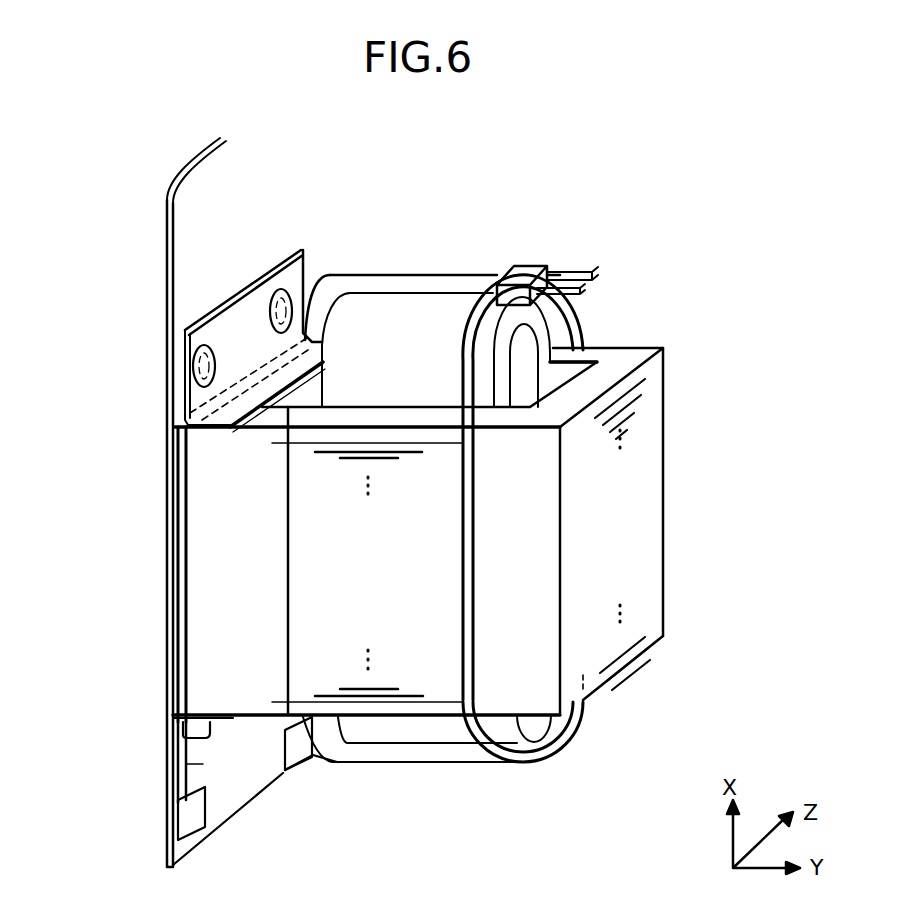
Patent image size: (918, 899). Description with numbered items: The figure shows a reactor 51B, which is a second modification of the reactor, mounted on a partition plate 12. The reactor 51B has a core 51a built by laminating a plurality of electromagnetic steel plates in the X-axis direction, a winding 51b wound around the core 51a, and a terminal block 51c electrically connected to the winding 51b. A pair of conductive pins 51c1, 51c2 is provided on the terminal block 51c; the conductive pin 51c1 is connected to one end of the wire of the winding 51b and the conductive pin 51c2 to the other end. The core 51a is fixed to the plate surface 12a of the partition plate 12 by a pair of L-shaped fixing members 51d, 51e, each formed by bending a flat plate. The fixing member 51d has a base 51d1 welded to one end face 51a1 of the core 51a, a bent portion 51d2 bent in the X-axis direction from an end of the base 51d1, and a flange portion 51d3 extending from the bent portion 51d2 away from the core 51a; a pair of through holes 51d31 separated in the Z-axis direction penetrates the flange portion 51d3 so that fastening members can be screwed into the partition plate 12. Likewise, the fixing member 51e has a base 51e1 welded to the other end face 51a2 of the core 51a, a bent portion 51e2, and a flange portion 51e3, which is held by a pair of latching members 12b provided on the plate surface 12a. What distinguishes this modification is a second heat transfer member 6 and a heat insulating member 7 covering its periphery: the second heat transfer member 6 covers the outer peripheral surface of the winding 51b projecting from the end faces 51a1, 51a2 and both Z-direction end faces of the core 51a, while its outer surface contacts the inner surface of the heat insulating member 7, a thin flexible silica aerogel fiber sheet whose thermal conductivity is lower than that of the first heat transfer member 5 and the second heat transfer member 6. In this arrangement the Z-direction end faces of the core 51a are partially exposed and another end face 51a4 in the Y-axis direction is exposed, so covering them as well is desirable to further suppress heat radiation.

The first heat transfer member 5 is at (168, 494).
The second heat transfer member 6 is at (473, 483).
The heat insulating member 7 is at (452, 520).
The partition plate 12 is at (167, 222).
The plate surface 12a is at (205, 192).
The latching members 12b is at (293, 750).
The core 51a is at (633, 660).
The one end face 51a1 is at (640, 352).
The other end face 51a2 is at (585, 703).
The other end face in Y-axis direction 51a4 is at (647, 543).
The reactor 51B is at (667, 585).
The winding 51b is at (543, 327).
The terminal block 51c is at (528, 265).
The conductive pin 51c1 is at (592, 275).
The conductive pin 51c2 is at (580, 291).
The fixing member 51d is at (283, 262).
The base 51d1 is at (178, 446).
The bent portion 51d2 is at (190, 428).
The flange portion 51d3 is at (195, 396).
The through holes 51d31 is at (200, 362).
The fixing member 51e is at (235, 777).
The base 51e1 is at (212, 727).
The bent portion 51e2 is at (177, 722).
The flange portion 51e3 is at (203, 764).